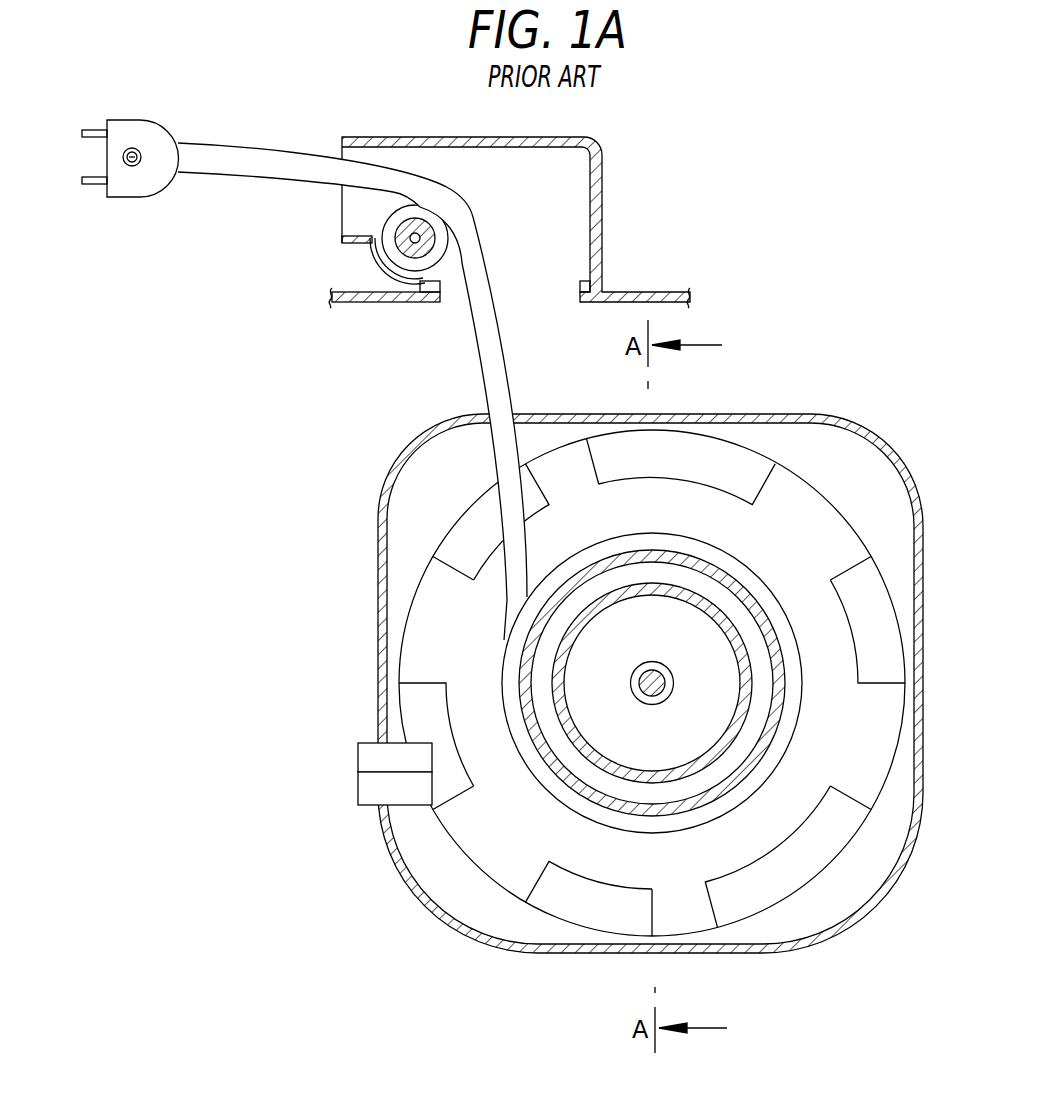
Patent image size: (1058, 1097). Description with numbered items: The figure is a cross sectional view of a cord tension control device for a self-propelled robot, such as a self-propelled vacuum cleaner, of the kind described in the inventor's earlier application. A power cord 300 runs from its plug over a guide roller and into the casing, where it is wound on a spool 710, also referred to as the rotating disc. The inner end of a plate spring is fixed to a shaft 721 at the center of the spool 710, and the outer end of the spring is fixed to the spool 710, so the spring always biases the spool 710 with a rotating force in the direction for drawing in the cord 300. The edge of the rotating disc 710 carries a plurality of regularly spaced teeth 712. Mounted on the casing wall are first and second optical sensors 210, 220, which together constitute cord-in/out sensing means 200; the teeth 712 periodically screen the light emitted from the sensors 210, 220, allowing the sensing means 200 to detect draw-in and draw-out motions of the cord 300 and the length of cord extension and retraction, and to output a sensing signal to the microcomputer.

The power cord 300 is at (248, 165).
The teeth 712 is at (430, 582).
The spool 710 is at (652, 705).
The shaft 721 is at (631, 683).
The cord-in/out sensing means 200 is at (312, 777).
The first optical sensor 210 is at (372, 755).
The second optical sensor 220 is at (356, 809).